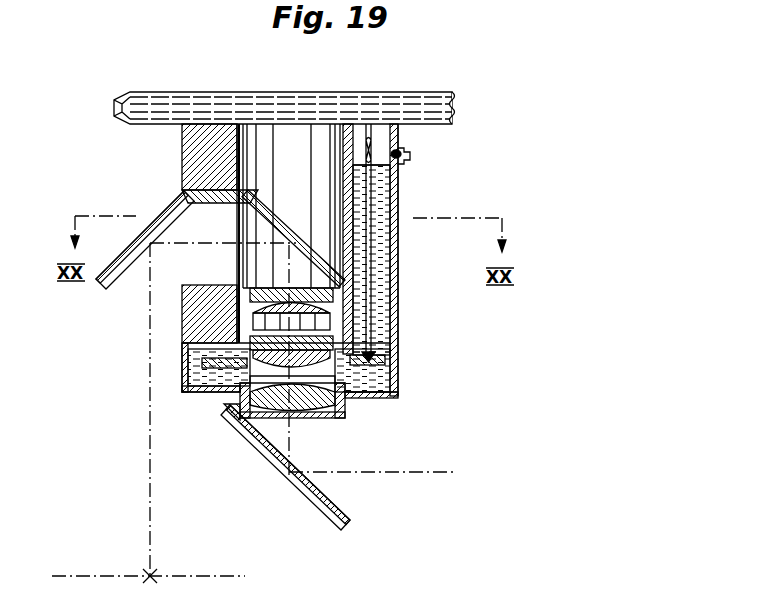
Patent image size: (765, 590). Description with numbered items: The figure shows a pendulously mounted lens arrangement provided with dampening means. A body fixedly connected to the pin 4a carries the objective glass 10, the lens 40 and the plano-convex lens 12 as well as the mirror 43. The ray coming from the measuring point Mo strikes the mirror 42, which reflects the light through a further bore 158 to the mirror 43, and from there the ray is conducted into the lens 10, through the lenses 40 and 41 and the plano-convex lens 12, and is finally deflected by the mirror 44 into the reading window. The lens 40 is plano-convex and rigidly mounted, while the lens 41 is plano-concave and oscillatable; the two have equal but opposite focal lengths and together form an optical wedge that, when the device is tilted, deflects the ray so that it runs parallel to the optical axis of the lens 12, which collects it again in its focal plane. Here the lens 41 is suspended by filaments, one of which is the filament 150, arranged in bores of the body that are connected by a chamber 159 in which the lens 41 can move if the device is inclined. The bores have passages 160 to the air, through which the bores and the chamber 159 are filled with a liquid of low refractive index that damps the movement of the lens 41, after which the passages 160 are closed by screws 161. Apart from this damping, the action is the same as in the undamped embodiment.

The pin 4a is at (267, 94).
The mirror 42 is at (166, 221).
The mirror 43 is at (275, 220).
The objective glass 10 is at (268, 295).
The bore 158 is at (190, 266).
The filament 150 is at (373, 262).
The passage 160 is at (399, 172).
The screw 161 is at (407, 153).
The lens 40 is at (398, 330).
The lens 41 is at (350, 392).
The chamber 159 is at (226, 376).
The plano-convex lens 12 is at (316, 406).
The mirror 44 is at (260, 441).
The measuring point Mo is at (158, 571).